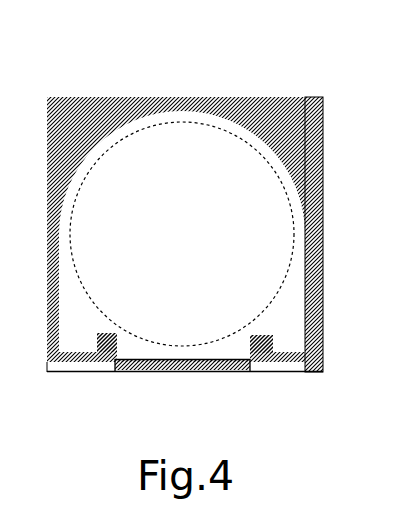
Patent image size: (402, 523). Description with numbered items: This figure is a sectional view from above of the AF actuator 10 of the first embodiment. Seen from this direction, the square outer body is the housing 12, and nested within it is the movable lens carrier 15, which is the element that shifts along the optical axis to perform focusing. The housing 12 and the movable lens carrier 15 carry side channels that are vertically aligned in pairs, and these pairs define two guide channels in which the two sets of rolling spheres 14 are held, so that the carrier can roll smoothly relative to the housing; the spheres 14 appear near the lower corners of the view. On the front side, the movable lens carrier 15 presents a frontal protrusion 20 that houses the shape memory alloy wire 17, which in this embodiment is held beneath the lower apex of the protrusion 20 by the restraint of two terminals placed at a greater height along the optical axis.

The AF actuator 10 is at (136, 68).
The housing 12 is at (270, 96).
The rolling spheres 14 is at (113, 372).
The movable lens carrier 15 is at (395, 170).
The shape memory alloy wire 17 is at (141, 371).
The frontal protrusion 20 is at (224, 371).